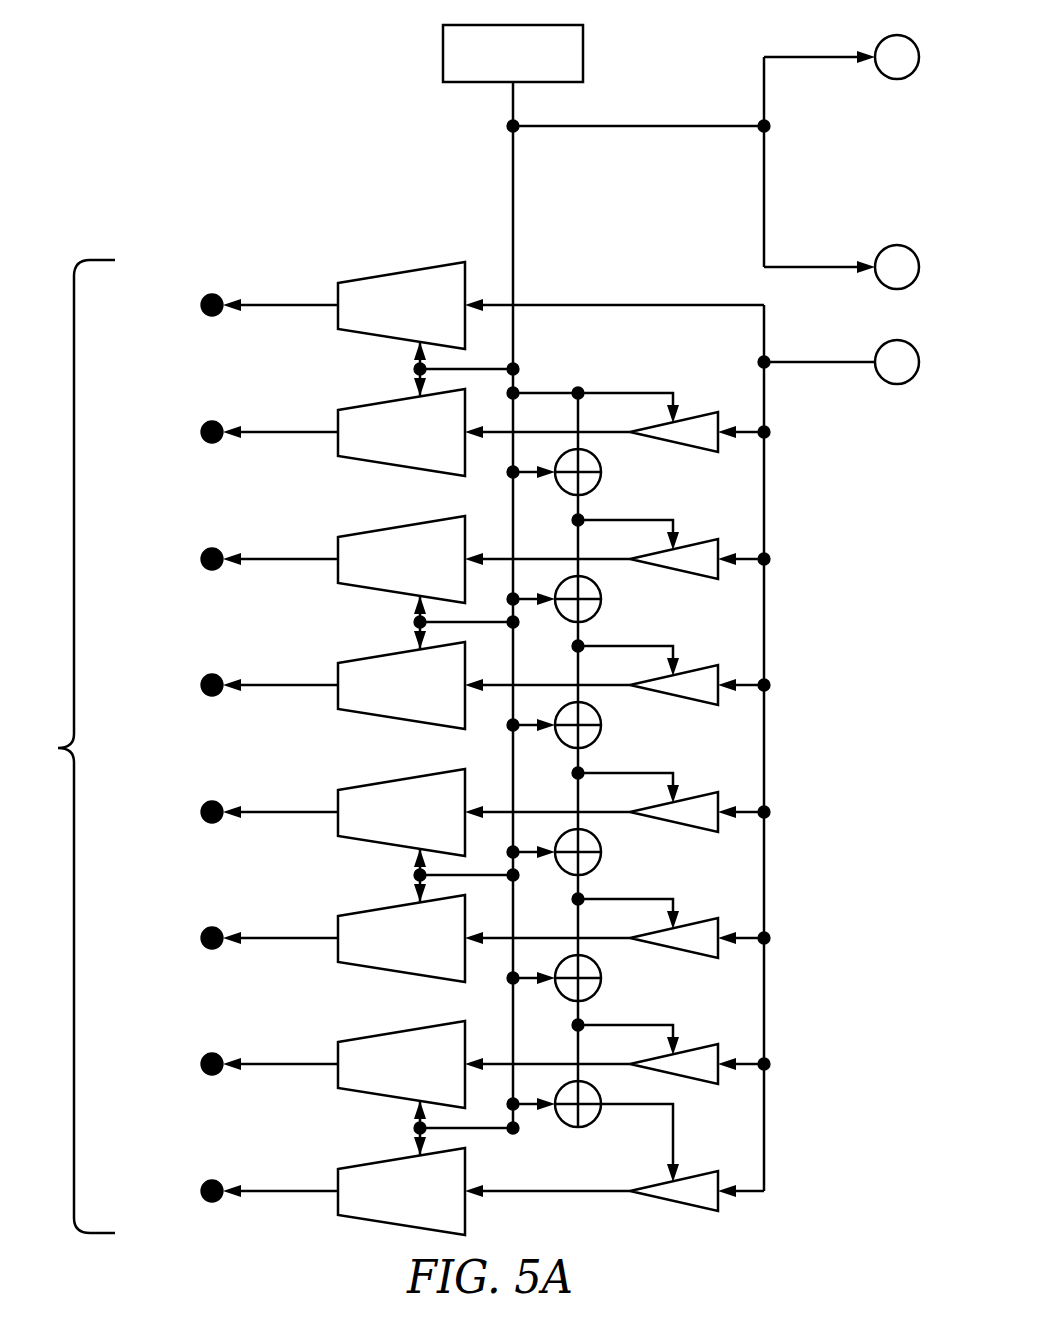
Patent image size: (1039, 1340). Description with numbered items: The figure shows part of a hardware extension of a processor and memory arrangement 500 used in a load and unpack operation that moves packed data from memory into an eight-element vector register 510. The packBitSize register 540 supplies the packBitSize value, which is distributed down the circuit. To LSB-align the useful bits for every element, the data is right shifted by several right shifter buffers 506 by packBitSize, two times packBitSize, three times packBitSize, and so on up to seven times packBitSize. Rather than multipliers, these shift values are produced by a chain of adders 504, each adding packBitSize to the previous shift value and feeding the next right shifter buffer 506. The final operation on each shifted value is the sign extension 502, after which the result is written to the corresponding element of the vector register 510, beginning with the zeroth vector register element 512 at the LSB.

The processor and memory arrangement 500 is at (158, 50).
The packBitSize register 540 is at (458, 25).
The sign extension 502 is at (400, 272).
The vector register element '0' 512 is at (214, 318).
The 8-element vector register 510 is at (105, 746).
The adders 504 is at (601, 468).
The right shifter buffers 506 is at (708, 412).